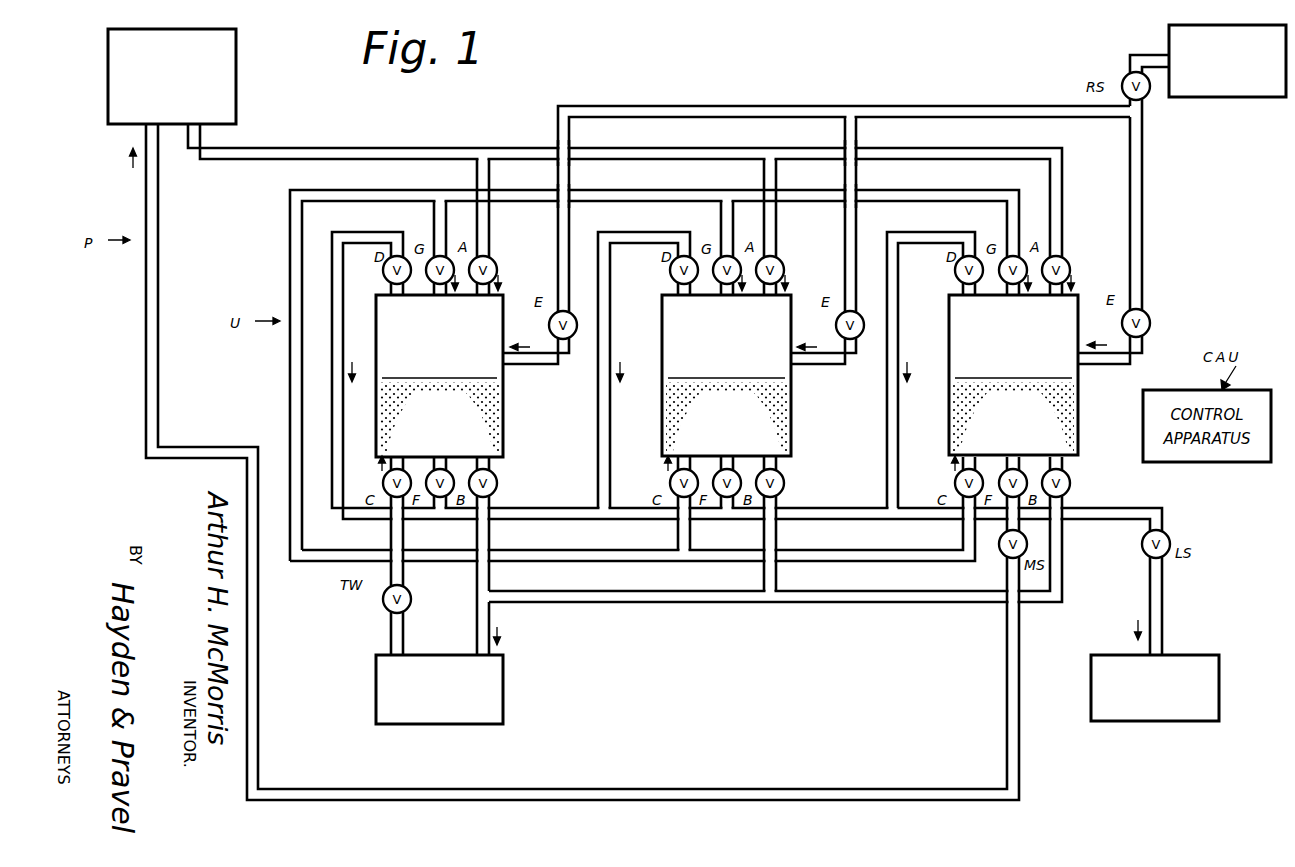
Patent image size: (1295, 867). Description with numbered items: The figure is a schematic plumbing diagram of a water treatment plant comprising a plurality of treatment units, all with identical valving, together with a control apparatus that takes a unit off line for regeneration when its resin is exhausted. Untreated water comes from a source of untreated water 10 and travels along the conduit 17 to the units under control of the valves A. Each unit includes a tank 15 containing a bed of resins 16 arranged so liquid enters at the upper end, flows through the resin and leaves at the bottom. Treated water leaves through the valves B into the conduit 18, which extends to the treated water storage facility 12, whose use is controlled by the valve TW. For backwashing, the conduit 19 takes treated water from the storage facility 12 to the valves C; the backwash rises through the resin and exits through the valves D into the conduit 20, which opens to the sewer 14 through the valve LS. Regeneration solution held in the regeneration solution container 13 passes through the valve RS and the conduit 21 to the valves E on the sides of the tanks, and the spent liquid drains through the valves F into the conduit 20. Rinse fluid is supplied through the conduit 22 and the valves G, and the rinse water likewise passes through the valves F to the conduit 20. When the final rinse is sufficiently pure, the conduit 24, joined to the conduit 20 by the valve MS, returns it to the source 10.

The source of untreated water 10 is at (236, 76).
The treated water storage facility 12 is at (440, 724).
The regeneration solution container 13 is at (1169, 30).
The sewer 14 is at (1200, 655).
The tank 15 is at (503, 404).
The bed of resins 16 is at (448, 428).
The conduit 17 is at (324, 148).
The conduit 18 is at (665, 603).
The conduit 19 is at (582, 562).
The conduit 20 is at (563, 508).
The conduit 21 is at (805, 106).
The conduit 22 is at (290, 213).
The conduit 24 is at (730, 789).